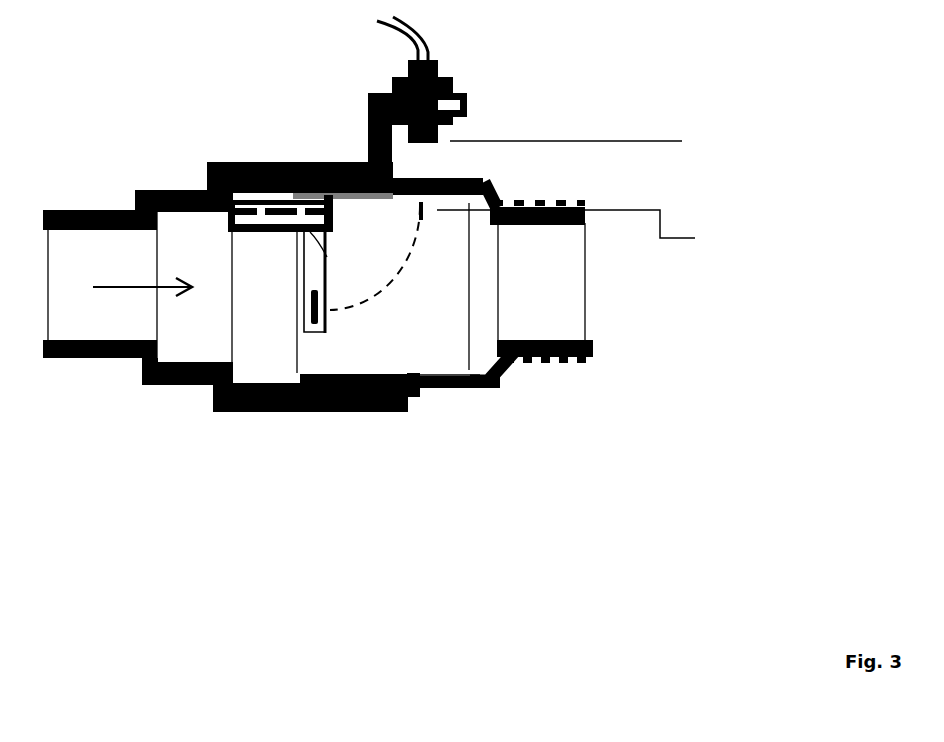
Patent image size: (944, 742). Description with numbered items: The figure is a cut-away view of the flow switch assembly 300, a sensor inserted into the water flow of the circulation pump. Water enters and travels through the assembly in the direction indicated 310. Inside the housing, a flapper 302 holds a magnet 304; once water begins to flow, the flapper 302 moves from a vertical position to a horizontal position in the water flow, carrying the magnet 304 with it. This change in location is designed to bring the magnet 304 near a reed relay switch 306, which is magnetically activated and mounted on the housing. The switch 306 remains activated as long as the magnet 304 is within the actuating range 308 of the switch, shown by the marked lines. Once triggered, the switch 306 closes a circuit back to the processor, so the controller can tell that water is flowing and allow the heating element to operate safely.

The check valve assembly 300 is at (125, 585).
The valve flap 302 is at (325, 335).
The magnet 304 is at (315, 335).
The sensor 306 is at (438, 68).
The sensing reference line 308 is at (653, 141).
The flow direction 310 is at (131, 279).